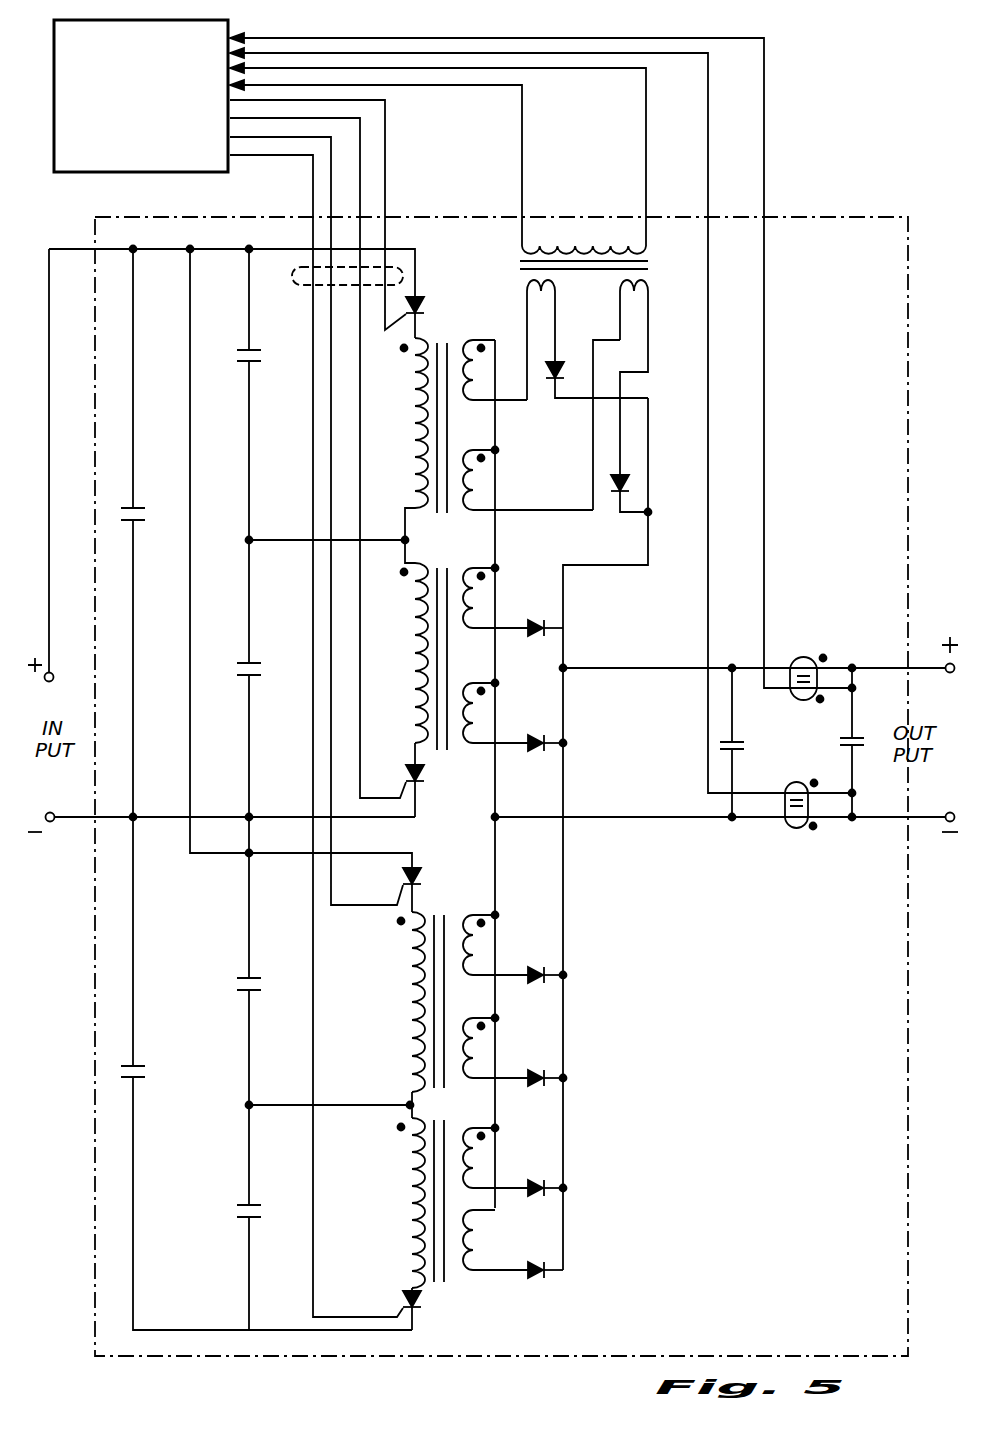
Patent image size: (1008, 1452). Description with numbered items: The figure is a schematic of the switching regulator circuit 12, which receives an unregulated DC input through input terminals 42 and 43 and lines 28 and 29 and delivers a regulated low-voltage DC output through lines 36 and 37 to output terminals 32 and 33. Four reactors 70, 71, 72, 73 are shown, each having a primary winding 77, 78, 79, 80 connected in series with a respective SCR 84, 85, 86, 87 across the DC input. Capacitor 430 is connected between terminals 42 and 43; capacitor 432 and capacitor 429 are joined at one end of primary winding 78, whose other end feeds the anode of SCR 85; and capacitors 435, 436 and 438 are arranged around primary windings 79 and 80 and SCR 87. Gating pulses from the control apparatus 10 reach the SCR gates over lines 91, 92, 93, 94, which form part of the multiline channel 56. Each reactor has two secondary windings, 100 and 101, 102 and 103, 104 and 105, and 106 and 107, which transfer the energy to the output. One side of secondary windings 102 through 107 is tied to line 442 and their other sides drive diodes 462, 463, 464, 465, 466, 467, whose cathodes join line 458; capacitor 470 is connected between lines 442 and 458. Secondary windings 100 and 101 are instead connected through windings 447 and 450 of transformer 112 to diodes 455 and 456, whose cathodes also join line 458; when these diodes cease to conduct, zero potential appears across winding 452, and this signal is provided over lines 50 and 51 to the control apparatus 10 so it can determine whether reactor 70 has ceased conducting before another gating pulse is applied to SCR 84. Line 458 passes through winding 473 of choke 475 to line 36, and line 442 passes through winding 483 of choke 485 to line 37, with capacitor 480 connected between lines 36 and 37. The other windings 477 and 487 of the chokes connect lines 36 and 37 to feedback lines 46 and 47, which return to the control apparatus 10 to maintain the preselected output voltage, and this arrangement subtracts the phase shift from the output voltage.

The control apparatus 10 is at (130, 149).
The switching regulator circuit 12 is at (831, 216).
The input line 28 is at (50, 640).
The input line 29 is at (70, 815).
The output terminal 32 is at (948, 660).
The output terminal 33 is at (945, 826).
The output line 36 is at (930, 672).
The output line 37 is at (938, 794).
The input terminal 42 is at (50, 682).
The input terminal 43 is at (55, 832).
The feedback line 46 is at (764, 168).
The feedback line 47 is at (708, 162).
The line 50 is at (524, 148).
The line 51 is at (646, 150).
The multiline channel 56 is at (298, 277).
The reactor 70 is at (480, 541).
The reactor 71 is at (458, 569).
The reactor 72 is at (451, 1085).
The reactor 73 is at (440, 1125).
The primary winding 77 is at (430, 393).
The primary winding 78 is at (425, 640).
The primary winding 79 is at (420, 985).
The primary winding 80 is at (420, 1158).
The SCR 84 is at (420, 298).
The SCR 85 is at (407, 773).
The SCR 86 is at (418, 870).
The SCR 87 is at (405, 1300).
The gate line 91 is at (386, 123).
The gate line 92 is at (360, 158).
The gate line 93 is at (331, 178).
The gate line 94 is at (313, 206).
The secondary winding 100 is at (463, 341).
The secondary winding 101 is at (462, 452).
The secondary winding 102 is at (465, 630).
The secondary winding 103 is at (465, 745).
The secondary winding 104 is at (475, 912).
The secondary winding 105 is at (458, 1021).
The secondary winding 106 is at (462, 1129).
The secondary winding 107 is at (463, 1272).
The transformer 112 is at (607, 324).
The capacitor 429 is at (247, 662).
The capacitor 430 is at (135, 507).
The capacitor 432 is at (248, 348).
The capacitor 435 is at (247, 990).
The capacitor 436 is at (247, 1205).
The capacitor 438 is at (136, 1078).
The line 442 is at (543, 820).
The winding 447 is at (564, 340).
The winding 450 is at (662, 285).
The winding 452 is at (606, 240).
The diode 455 is at (548, 382).
The diode 456 is at (625, 493).
The line 458 is at (755, 665).
The diode 462 is at (538, 634).
The diode 463 is at (538, 750).
The diode 464 is at (533, 970).
The diode 465 is at (533, 1074).
The diode 466 is at (537, 1196).
The diode 467 is at (537, 1276).
The capacitor 470 is at (735, 740).
The winding 473 is at (797, 656).
The choke 475 is at (830, 638).
The winding 477 is at (800, 701).
The capacitor 480 is at (848, 745).
The winding 483 is at (797, 831).
The choke 485 is at (823, 836).
The winding 487 is at (788, 786).